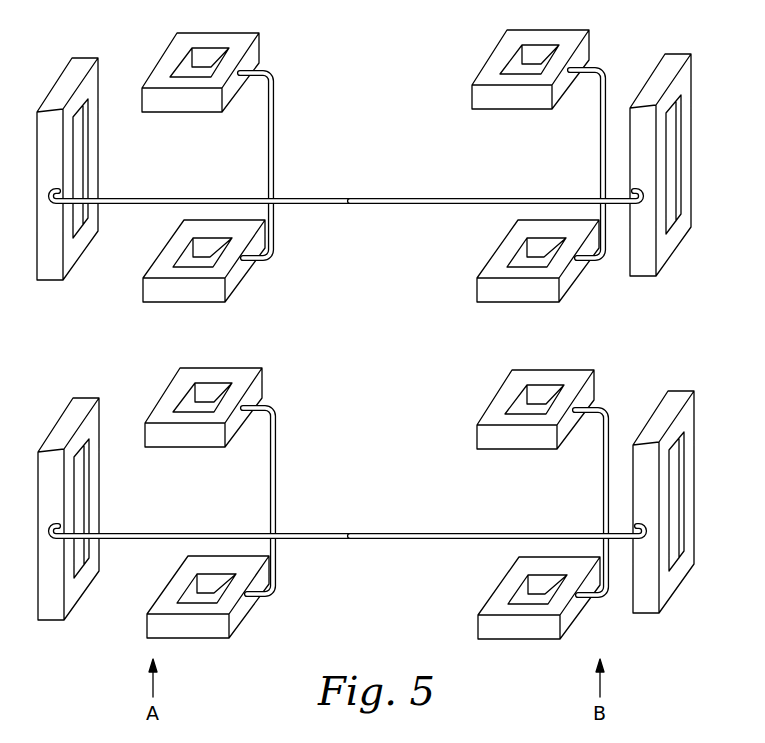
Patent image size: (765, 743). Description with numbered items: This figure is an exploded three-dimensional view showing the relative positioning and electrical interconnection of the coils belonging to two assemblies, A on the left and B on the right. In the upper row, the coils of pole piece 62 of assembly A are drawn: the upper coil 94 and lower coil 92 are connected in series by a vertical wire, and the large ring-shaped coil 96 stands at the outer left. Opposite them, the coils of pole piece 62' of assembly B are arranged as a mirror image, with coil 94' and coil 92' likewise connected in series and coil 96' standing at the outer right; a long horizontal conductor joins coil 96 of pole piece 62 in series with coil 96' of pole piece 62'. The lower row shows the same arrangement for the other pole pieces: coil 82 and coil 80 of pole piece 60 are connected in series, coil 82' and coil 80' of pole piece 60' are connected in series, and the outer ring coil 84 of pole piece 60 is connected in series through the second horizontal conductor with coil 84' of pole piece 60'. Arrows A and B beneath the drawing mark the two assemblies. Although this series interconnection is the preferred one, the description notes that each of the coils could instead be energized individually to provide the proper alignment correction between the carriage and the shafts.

The coil 96 is at (80, 148).
The coil 94 is at (210, 56).
The coil 92 is at (212, 266).
The pole piece 62 is at (200, 173).
The coil 96' is at (665, 144).
The coil 94' is at (530, 54).
The coil 92' is at (538, 281).
The pole piece 62' is at (495, 172).
The coil 84 is at (64, 496).
The coil 82 is at (203, 392).
The coil 80 is at (213, 597).
The pole piece 60 is at (200, 516).
The coil 84' is at (670, 482).
The coil 82' is at (541, 389).
The coil 80' is at (531, 598).
The pole piece 60' is at (497, 513).